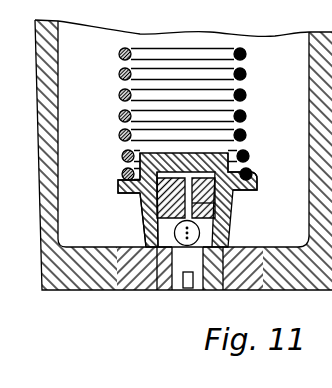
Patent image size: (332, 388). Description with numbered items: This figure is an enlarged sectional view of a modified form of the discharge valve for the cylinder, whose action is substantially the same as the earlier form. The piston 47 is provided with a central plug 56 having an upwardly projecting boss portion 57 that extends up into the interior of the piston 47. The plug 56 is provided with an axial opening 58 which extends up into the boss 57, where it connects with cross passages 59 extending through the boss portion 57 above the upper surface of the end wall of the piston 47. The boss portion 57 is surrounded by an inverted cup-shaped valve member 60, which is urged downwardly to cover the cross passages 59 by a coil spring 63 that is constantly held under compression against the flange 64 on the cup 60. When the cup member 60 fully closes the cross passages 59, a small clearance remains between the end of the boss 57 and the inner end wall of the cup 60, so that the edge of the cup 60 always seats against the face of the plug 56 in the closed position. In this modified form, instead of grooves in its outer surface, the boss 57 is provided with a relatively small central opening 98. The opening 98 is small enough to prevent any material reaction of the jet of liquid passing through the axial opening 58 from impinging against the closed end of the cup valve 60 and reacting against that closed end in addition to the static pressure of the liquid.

The piston 47 is at (43, 58).
The coil spring 63 is at (119, 115).
The flange 64 is at (254, 180).
The boss portion 57 is at (229, 208).
The central opening 98 is at (186, 203).
The cup-shaped valve member 60 is at (152, 230).
The central plug 56 is at (126, 278).
The cross passages 59 is at (185, 245).
The axial opening 58 is at (188, 262).